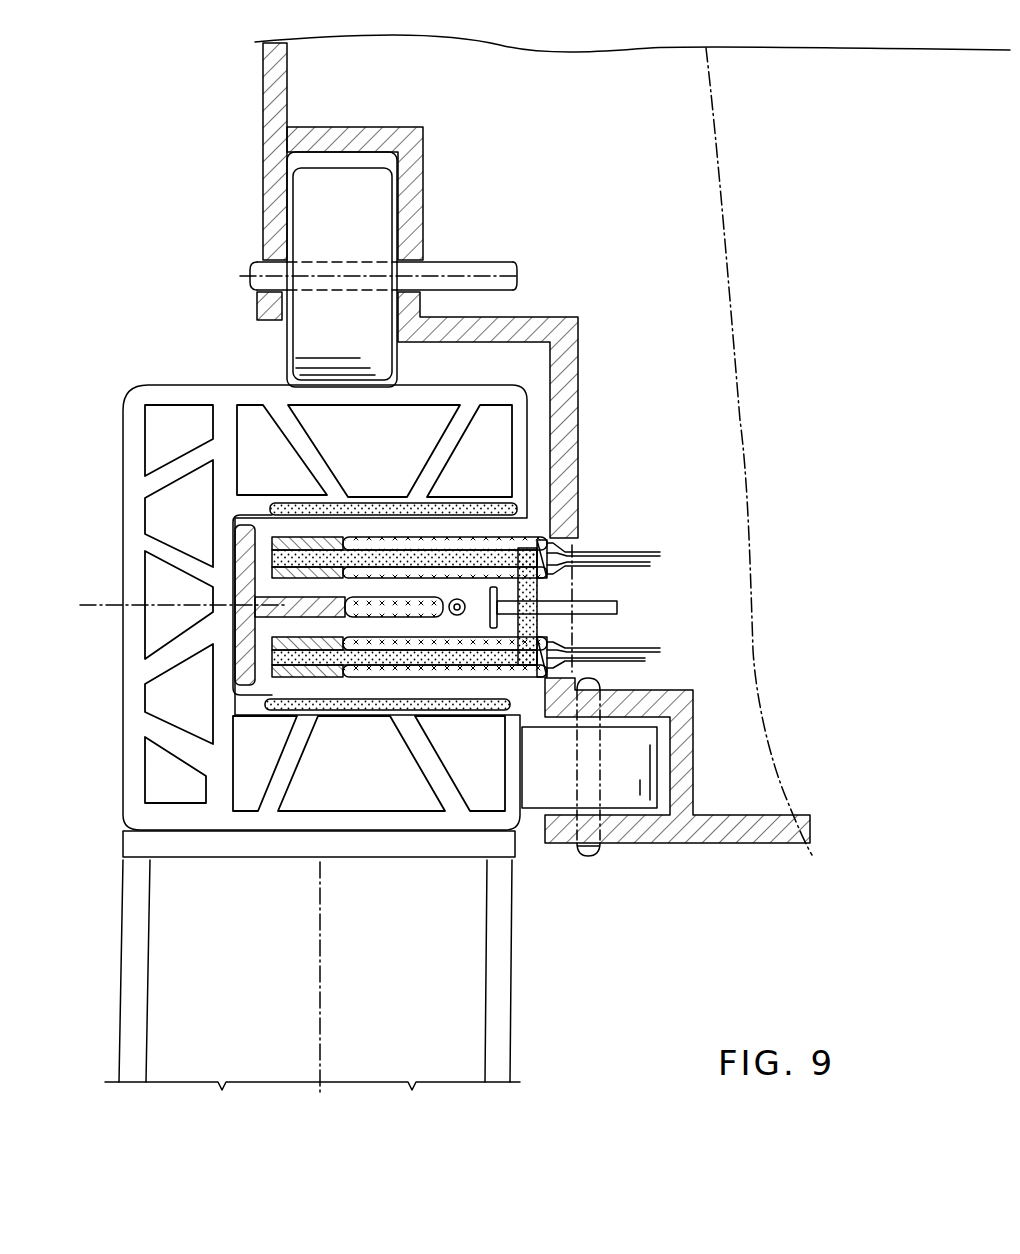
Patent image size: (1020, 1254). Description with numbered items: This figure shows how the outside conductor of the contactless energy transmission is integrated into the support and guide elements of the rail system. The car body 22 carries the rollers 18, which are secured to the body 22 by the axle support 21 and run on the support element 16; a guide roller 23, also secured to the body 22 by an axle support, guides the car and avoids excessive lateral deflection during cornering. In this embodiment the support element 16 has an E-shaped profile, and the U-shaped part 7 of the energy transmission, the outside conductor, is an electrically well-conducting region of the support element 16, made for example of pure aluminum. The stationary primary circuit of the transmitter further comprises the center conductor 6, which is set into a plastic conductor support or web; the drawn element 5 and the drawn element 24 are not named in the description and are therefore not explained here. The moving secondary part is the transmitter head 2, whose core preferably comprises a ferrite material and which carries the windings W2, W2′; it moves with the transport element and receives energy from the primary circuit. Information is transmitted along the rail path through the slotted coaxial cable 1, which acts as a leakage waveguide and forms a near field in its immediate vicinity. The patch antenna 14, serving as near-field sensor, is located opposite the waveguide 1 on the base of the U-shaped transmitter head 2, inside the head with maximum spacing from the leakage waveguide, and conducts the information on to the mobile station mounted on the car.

The coaxial cable 1 is at (466, 600).
The transmitter head 2 is at (538, 558).
The magnet core 5 is at (283, 605).
The center conductor 6 is at (330, 598).
The outside conductor 7 is at (316, 710).
The patch antenna 14 is at (538, 590).
The support element 16 is at (222, 398).
The rollers 18 is at (318, 215).
The axle support 21 is at (420, 195).
The body 22 is at (511, 104).
The guide roller 23 is at (622, 838).
The pedestal column 24 is at (464, 1010).
The winding W2 is at (660, 570).
The winding W2′ is at (661, 647).